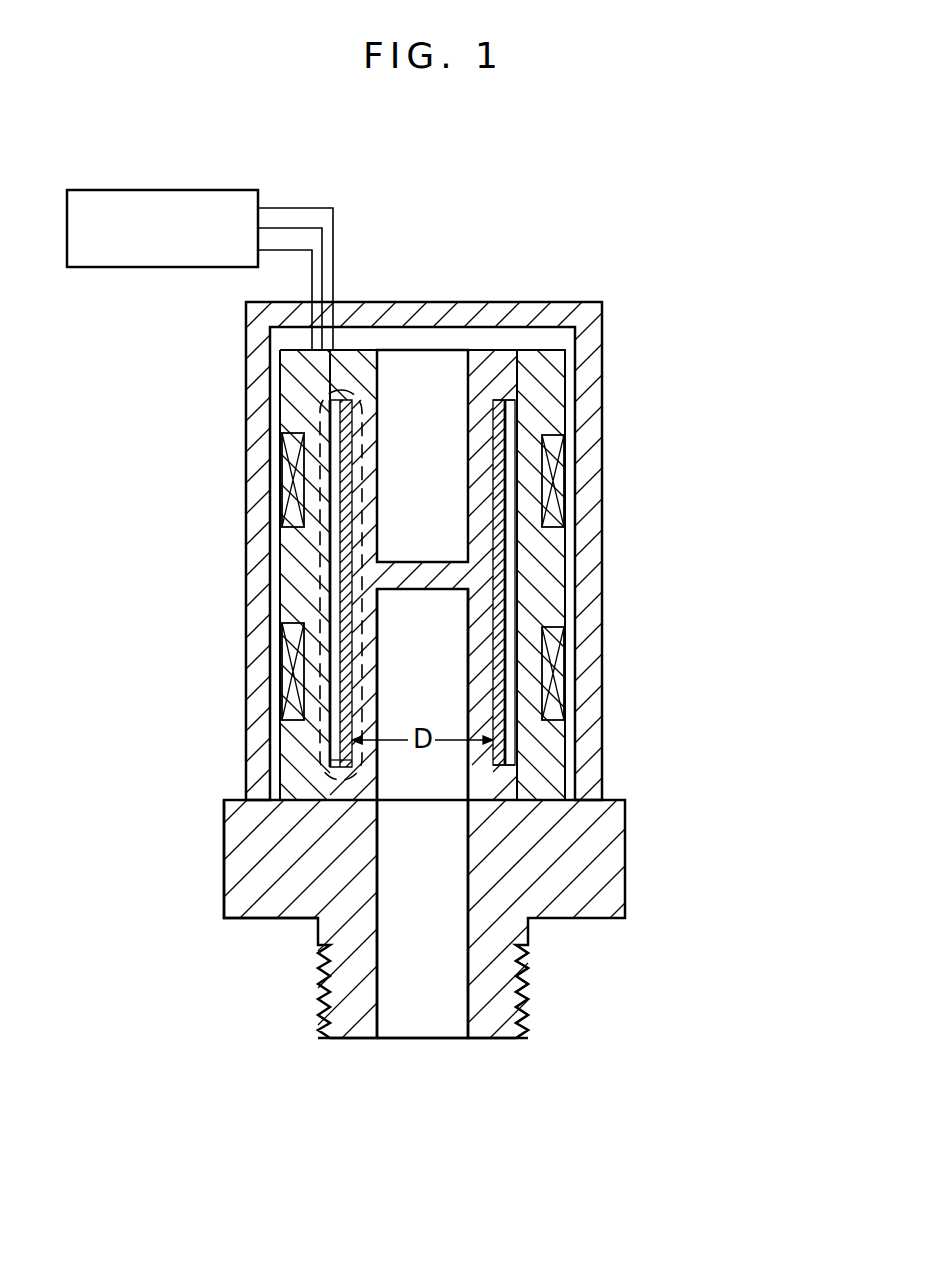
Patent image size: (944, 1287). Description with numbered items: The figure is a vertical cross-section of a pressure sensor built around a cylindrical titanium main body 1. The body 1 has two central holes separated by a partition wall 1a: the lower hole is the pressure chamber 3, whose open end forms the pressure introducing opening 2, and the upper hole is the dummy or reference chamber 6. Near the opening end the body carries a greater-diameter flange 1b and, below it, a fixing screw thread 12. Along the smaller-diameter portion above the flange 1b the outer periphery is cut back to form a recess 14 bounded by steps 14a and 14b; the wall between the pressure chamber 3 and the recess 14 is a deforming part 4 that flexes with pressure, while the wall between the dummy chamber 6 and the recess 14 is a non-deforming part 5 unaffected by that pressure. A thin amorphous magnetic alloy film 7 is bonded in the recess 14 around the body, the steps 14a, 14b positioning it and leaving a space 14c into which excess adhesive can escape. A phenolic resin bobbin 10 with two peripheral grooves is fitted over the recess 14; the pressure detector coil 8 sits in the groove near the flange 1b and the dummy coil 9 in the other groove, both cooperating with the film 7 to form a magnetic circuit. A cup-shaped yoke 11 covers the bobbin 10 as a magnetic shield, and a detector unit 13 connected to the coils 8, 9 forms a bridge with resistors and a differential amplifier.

The main body 1 is at (480, 589).
The partition wall 1a is at (425, 578).
The greater-diameter flange 1b is at (224, 889).
The pressure introducing opening 2 is at (420, 1040).
The pressure chamber 3 is at (430, 853).
The deforming part 4 is at (483, 752).
The non-deforming part 5 is at (480, 445).
The dummy chamber 6 is at (430, 437).
The amorphous magnetic alloy film 7 is at (497, 570).
The pressure detector coil 8 is at (552, 647).
The dummy coil 9 is at (552, 455).
The bobbin 10 is at (552, 375).
The yoke 11 is at (525, 300).
The fixing screw thread 12 is at (530, 990).
The detector unit 13 is at (170, 190).
The recess 14 is at (330, 574).
The step 14a is at (358, 398).
The step 14b is at (328, 752).
The space 14c is at (503, 605).